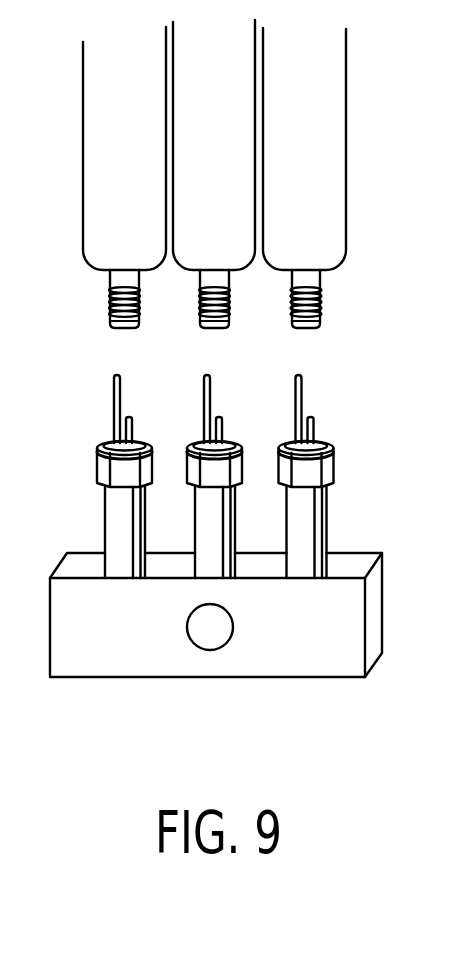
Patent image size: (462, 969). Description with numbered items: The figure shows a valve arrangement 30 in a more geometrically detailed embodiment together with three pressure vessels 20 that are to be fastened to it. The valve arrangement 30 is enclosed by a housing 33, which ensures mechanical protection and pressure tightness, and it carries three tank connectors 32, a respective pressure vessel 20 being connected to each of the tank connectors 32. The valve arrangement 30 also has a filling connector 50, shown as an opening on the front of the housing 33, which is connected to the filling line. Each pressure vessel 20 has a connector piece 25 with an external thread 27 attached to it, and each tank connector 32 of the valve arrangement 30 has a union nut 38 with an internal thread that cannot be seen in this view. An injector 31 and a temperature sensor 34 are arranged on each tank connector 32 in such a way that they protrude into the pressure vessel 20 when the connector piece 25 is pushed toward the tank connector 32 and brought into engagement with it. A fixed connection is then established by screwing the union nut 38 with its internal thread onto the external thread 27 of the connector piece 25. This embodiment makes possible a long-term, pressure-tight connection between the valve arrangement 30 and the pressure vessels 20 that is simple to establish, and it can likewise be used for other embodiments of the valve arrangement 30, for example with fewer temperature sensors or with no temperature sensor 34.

The pressure vessel 20 is at (137, 168).
The connector piece 25 is at (116, 282).
The external thread 27 is at (108, 296).
The valve arrangement 30 is at (250, 656).
The injector 31 is at (113, 398).
The tank connector 32 is at (113, 508).
The housing 33 is at (350, 637).
The temperature sensor 34 is at (131, 417).
The union nut 38 is at (118, 472).
The filling connector 50 is at (225, 637).